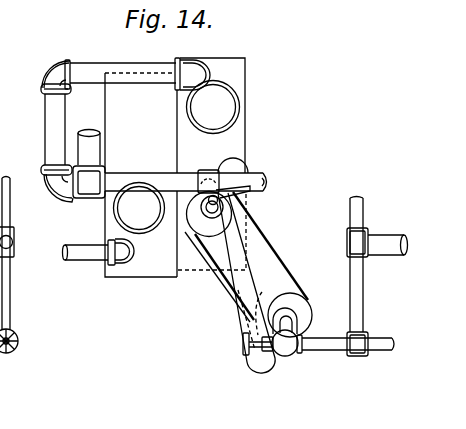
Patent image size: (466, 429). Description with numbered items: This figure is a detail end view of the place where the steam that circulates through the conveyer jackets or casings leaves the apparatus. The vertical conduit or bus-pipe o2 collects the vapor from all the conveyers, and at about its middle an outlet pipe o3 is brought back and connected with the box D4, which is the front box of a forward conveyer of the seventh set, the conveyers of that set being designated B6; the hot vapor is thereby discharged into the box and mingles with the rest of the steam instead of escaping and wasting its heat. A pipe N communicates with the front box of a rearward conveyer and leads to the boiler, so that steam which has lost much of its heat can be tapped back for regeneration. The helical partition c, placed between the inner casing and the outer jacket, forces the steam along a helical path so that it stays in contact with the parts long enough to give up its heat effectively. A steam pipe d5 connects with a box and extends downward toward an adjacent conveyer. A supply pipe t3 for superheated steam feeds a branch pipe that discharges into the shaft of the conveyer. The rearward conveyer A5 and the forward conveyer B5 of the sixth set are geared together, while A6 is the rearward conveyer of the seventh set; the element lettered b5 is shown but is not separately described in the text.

The outlet pipe o3 is at (50, 117).
The vertical conduit or bus-pipe o2 is at (89, 138).
The rearward conveyer of the seventh set A6 is at (132, 207).
The pipe N is at (82, 260).
The helical partition c is at (205, 199).
The forward conveyer of the sixth set B5 is at (208, 228).
The belt b5 is at (265, 256).
The steam pipe d5 is at (243, 301).
The rearward conveyer of the sixth set A5 is at (300, 313).
The box D4 is at (241, 93).
The forward conveyer of the seventh set B6 is at (240, 120).
The supply pipe t3 is at (362, 307).